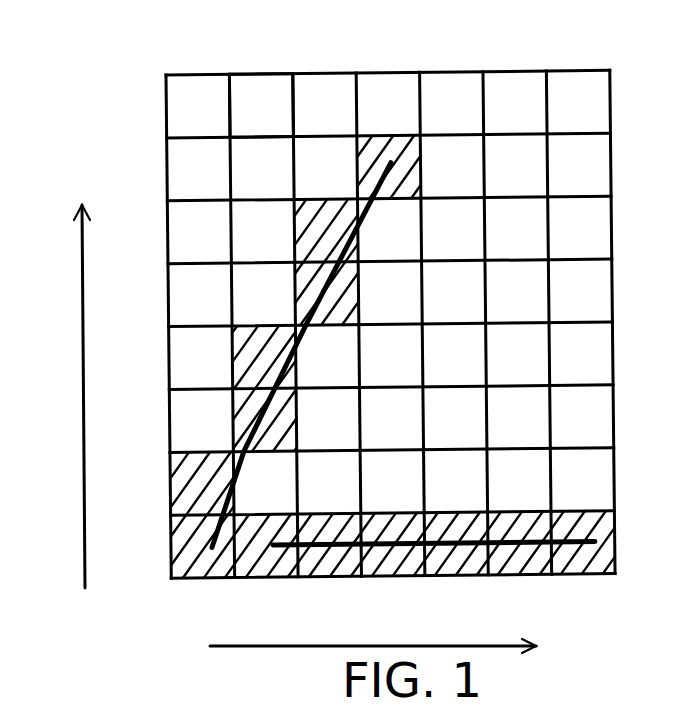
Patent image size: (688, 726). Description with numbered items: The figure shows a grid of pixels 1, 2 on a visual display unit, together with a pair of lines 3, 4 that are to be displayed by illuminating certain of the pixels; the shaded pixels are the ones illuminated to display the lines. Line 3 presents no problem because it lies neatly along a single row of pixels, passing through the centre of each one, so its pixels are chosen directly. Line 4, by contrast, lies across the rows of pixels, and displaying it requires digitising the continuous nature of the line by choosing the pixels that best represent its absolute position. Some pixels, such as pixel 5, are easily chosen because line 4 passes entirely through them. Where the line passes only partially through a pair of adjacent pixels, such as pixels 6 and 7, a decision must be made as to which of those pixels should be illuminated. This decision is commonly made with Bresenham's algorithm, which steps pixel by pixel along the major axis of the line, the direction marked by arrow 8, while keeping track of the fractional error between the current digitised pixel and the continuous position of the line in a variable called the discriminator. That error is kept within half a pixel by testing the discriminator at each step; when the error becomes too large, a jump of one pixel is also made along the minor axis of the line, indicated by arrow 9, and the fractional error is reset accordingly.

The pixel 1 is at (195, 100).
The pixel 2 is at (259, 100).
The line 3 is at (380, 579).
The line 4 is at (262, 416).
The pixel 5 is at (303, 288).
The pixel 6 is at (305, 229).
The pixel 7 is at (402, 233).
The arrow 8 is at (85, 527).
The arrow 9 is at (270, 670).